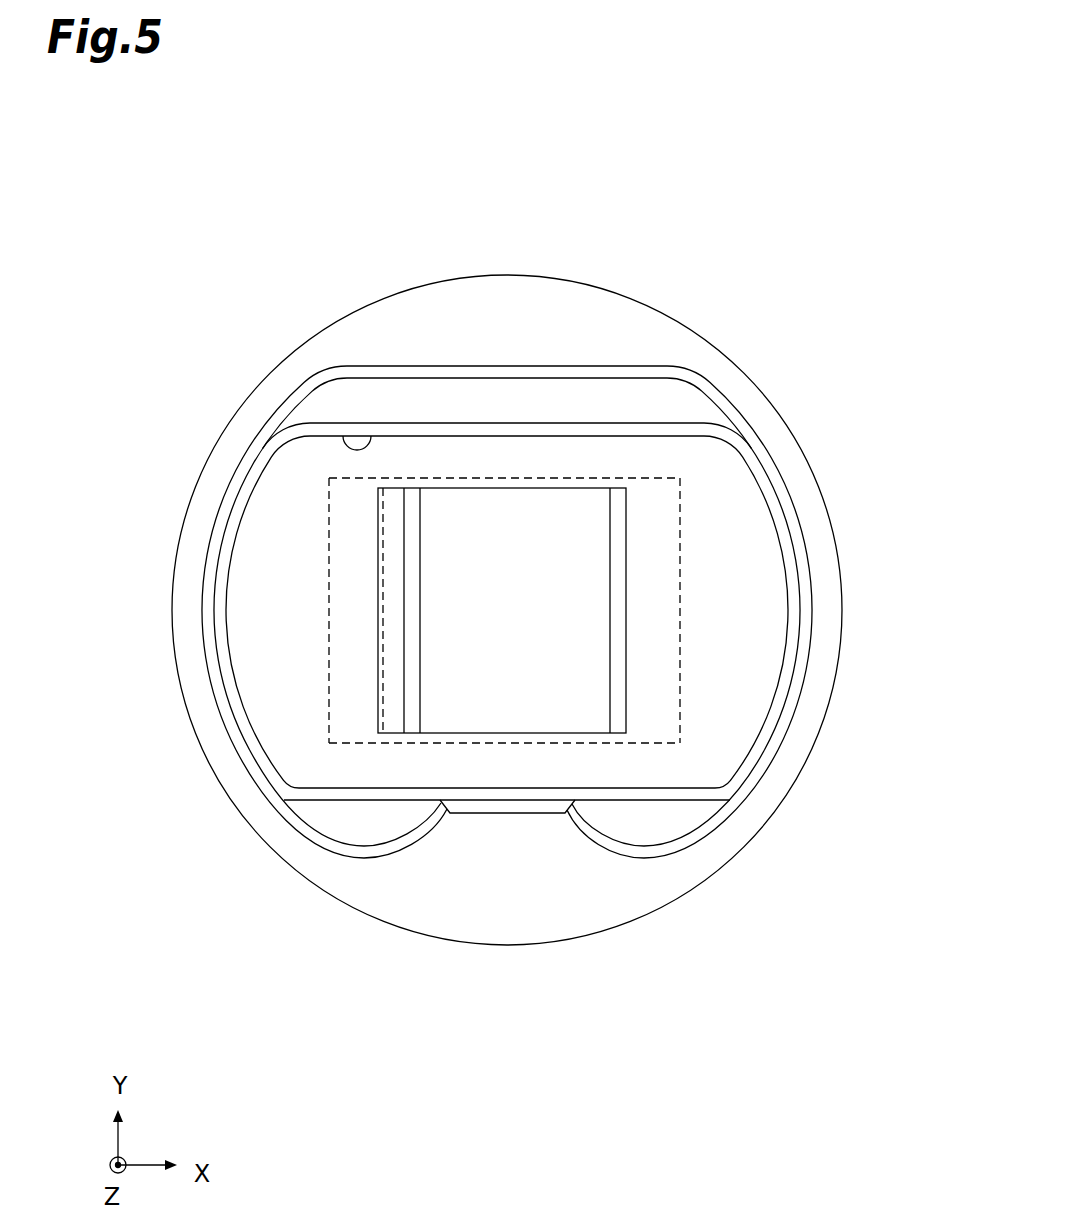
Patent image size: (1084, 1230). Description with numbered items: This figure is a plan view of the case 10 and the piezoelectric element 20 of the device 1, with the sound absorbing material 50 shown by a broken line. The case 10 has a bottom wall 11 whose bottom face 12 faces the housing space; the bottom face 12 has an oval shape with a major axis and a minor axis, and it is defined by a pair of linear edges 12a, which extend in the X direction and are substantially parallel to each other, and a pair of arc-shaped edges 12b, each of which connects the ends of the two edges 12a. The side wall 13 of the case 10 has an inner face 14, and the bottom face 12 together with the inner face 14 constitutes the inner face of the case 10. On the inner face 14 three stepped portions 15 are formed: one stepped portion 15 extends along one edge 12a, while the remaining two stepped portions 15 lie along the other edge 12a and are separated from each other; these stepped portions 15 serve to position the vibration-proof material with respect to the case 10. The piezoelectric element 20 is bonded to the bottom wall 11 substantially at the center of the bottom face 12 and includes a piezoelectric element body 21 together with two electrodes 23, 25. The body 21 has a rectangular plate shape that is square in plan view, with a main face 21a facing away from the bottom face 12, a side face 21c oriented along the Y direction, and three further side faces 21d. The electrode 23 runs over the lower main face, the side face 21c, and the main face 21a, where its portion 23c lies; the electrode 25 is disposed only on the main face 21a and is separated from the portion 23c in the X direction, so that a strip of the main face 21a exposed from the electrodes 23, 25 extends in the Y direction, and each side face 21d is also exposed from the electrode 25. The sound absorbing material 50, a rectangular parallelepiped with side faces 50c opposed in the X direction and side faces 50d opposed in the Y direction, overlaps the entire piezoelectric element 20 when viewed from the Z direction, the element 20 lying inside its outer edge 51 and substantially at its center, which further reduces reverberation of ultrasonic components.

The connector assembly 1 is at (292, 305).
The case 10 is at (728, 352).
The bottom wall 11 is at (452, 609).
The bottom face 12 is at (259, 568).
The edge 12a is at (624, 432).
The edge 12b is at (254, 485).
The side wall 13 is at (192, 723).
The inner face 14 is at (350, 432).
The stepped portion 15 is at (420, 400).
The piezoelectric element 20 is at (502, 614).
The piezoelectric element body 21 is at (628, 722).
The main face 21a is at (413, 715).
The side face 21c is at (381, 660).
The side face 21d is at (501, 487).
The electrode 23 is at (280, 827).
The portion 23c is at (395, 724).
The electrode 25 is at (563, 714).
The sound absorbing material 50 is at (519, 608).
The side face 50c is at (330, 612).
The side face 50d is at (565, 477).
The outer edge 51 is at (519, 608).